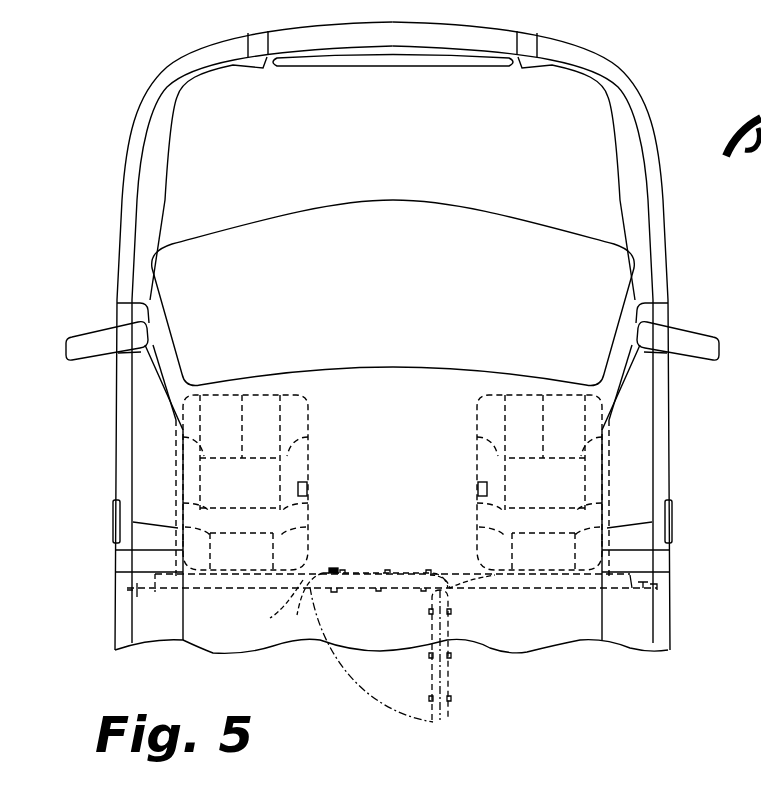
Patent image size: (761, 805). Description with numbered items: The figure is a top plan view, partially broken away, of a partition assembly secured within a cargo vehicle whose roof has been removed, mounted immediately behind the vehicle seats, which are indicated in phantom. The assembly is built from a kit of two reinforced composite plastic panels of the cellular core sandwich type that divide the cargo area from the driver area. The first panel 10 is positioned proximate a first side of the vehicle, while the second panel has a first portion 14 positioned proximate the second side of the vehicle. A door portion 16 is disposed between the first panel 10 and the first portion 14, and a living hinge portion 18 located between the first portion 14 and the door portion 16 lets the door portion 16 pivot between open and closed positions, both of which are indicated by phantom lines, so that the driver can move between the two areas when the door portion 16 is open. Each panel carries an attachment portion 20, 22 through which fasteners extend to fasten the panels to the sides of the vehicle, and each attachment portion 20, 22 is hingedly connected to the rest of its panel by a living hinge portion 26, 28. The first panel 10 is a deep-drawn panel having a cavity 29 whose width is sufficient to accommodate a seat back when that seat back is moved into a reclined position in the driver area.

The first panel 10 is at (300, 574).
The first portion 14 is at (532, 590).
The door portion 16 is at (322, 574).
The living hinge portion 18 is at (451, 590).
The attachment portion 20 is at (127, 596).
The attachment portion 22 is at (643, 578).
The living hinge portion 26 is at (153, 593).
The living hinge portion 28 is at (634, 592).
The cavity 29 is at (305, 592).